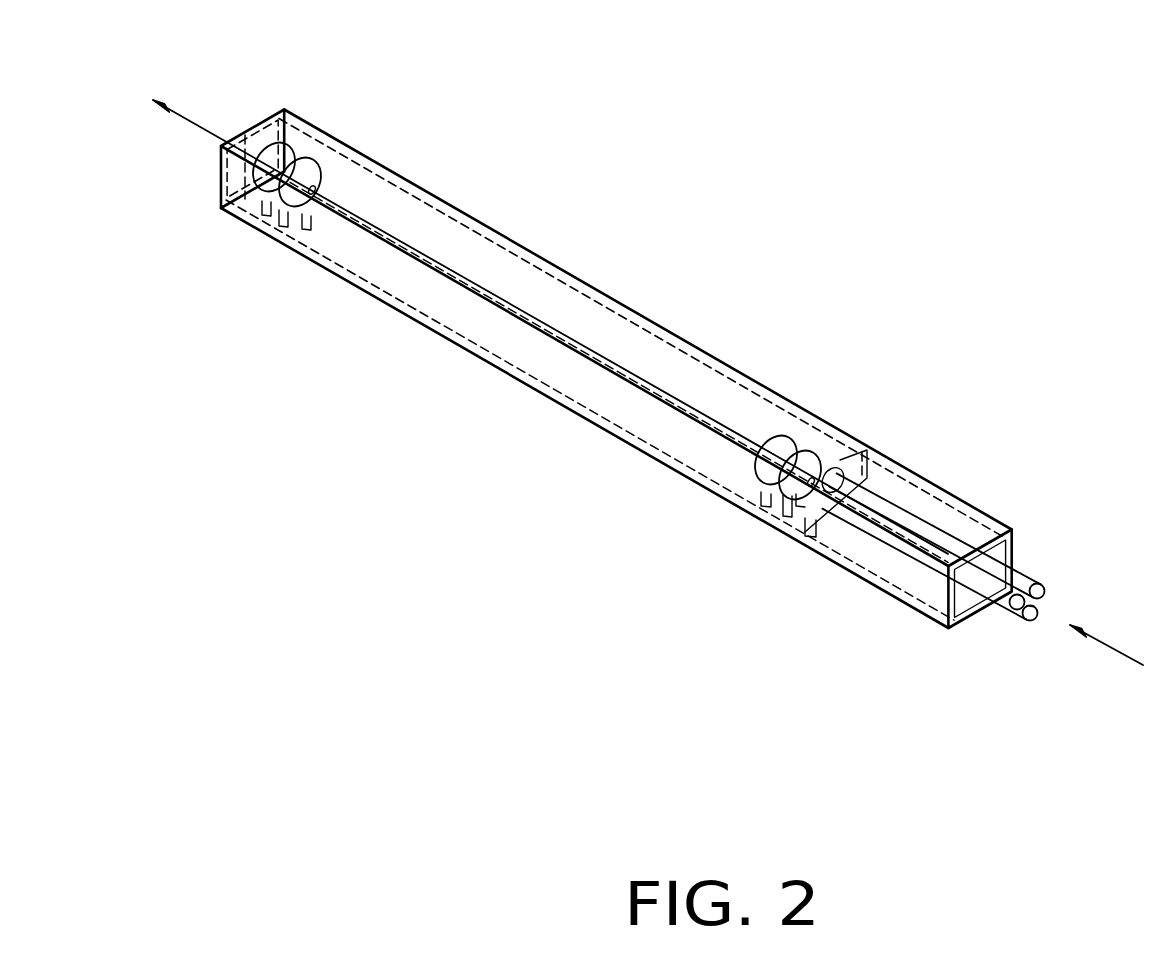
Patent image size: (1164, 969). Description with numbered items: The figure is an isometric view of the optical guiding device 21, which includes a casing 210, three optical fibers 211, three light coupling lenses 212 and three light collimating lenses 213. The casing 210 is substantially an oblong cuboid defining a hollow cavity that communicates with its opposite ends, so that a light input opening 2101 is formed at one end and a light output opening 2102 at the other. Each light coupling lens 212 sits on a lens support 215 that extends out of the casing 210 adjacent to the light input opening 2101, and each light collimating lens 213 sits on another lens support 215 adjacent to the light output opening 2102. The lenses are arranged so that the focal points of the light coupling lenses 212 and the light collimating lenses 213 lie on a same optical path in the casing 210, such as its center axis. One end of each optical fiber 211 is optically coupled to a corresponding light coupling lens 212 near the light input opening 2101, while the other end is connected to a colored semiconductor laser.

The optical guiding device 21 is at (652, 208).
The casing 210 is at (458, 227).
The light input opening 2101 is at (970, 603).
The light output opening 2102 is at (250, 131).
The optical fibers 211 is at (1020, 580).
The light coupling lenses 212 is at (791, 437).
The light collimating lenses 213 is at (334, 131).
The lens support 215 is at (791, 437).